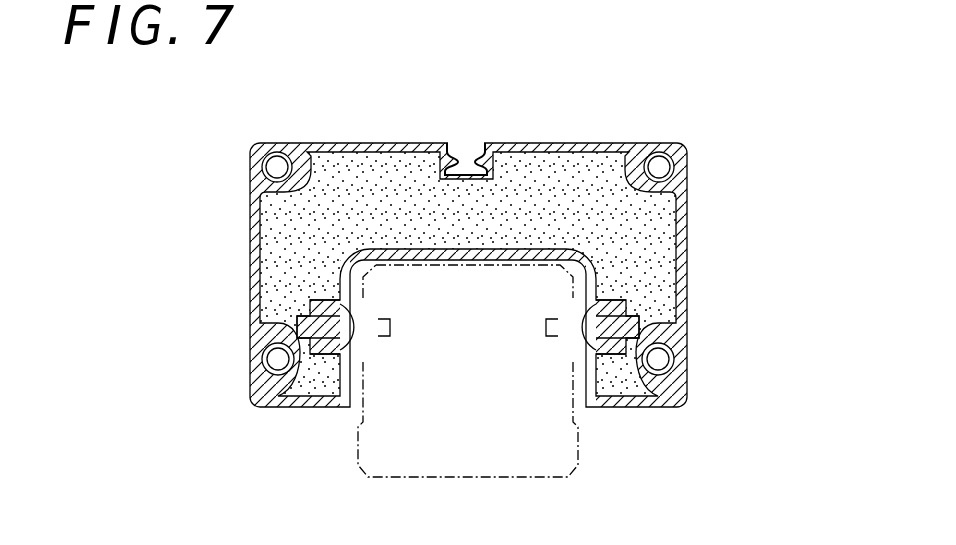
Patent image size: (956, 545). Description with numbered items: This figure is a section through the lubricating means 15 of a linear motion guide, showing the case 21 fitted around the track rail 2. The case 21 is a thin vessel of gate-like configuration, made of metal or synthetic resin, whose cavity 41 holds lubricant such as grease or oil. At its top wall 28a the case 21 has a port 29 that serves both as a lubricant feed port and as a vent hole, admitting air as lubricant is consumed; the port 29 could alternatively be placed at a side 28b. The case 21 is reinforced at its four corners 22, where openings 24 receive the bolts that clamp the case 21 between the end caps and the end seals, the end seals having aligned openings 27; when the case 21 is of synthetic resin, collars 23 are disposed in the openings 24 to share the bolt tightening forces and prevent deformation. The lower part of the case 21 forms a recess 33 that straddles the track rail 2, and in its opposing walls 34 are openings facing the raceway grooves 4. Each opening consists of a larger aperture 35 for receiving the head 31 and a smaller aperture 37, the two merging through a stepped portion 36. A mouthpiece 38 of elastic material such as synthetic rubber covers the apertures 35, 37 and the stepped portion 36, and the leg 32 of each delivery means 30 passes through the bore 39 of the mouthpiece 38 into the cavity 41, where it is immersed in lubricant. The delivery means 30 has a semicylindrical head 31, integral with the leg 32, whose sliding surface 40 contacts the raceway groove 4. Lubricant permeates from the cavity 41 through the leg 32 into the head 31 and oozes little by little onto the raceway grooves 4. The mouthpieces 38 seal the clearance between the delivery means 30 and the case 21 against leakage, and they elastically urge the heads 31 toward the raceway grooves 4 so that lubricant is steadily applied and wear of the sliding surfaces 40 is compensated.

The track rail 2 is at (467, 433).
The raceway groove 4 is at (566, 311).
The lubricating means 15 is at (623, 140).
The case 21 is at (561, 143).
The corner 22 is at (668, 387).
The collar 23 is at (668, 362).
The opening 24 is at (660, 368).
The opening 27 is at (254, 232).
The top wall 28a is at (394, 143).
The side 28b is at (688, 237).
The port 29 is at (474, 148).
The delivery means 30 is at (568, 352).
The head 31 is at (545, 329).
The leg 32 is at (628, 340).
The recess 33 is at (468, 261).
The opposing wall 34 is at (588, 380).
The larger aperture 35 is at (593, 302).
The stepped portion 36 is at (624, 302).
The smaller aperture 37 is at (632, 322).
The mouthpiece 38 is at (607, 358).
The bore 39 is at (618, 402).
The sliding surface 40 is at (559, 343).
The cavity 41 is at (508, 229).